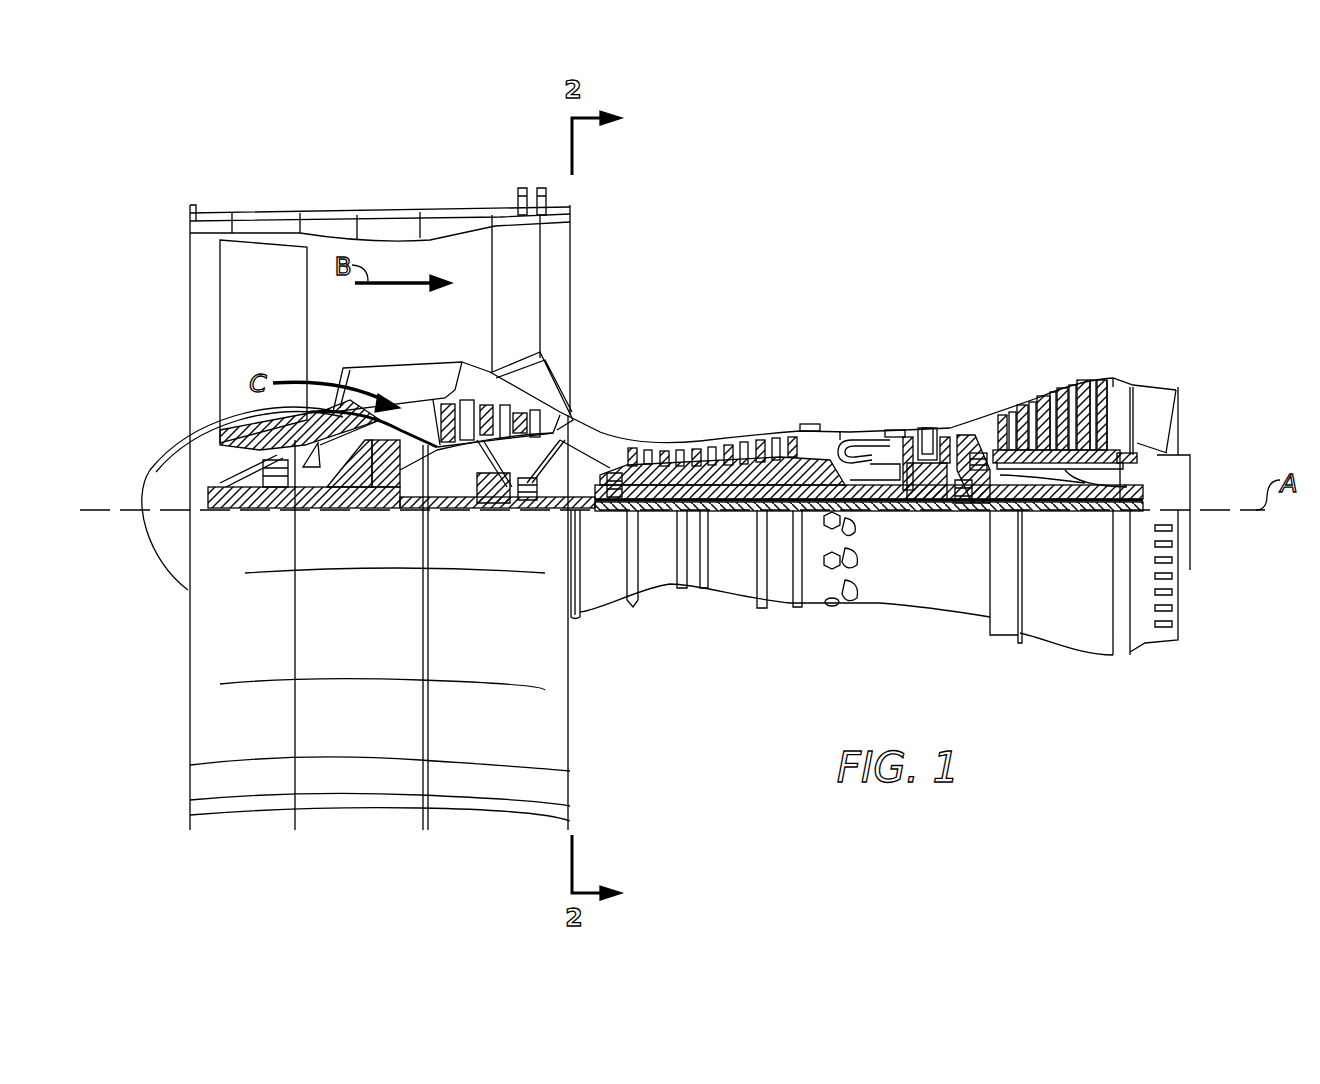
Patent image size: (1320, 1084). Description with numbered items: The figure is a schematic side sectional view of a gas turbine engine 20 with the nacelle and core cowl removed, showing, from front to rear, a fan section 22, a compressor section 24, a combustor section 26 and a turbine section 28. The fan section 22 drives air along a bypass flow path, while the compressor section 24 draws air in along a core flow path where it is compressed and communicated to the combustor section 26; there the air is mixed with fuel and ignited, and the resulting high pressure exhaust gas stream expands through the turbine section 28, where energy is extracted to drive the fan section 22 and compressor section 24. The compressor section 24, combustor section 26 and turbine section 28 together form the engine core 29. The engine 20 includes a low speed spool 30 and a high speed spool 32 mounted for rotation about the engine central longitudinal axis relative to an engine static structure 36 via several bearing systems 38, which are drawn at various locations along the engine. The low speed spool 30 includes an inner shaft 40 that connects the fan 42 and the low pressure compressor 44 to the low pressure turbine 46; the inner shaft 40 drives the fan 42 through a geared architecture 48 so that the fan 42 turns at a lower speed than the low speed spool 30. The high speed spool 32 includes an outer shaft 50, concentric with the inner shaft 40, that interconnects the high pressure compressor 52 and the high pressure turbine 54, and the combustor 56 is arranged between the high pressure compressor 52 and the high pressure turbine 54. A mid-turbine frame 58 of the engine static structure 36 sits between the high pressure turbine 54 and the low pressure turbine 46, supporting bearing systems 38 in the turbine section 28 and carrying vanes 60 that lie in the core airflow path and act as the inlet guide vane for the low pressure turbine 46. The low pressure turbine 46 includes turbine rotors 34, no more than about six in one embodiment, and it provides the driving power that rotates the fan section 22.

The gas turbine engine 20 is at (1034, 221).
The fan section 22 is at (178, 186).
The compressor section 24 is at (840, 313).
The combustor section 26 is at (850, 313).
The turbine section 28 is at (1140, 316).
The engine core 29 is at (430, 256).
The low speed spool 30 is at (730, 528).
The high speed spool 32 is at (762, 478).
The turbine rotors 34 is at (1085, 483).
The engine static structure 36 is at (780, 620).
The bearing systems 38 is at (268, 487).
The inner shaft 40 is at (590, 512).
The fan 42 is at (277, 316).
The low pressure compressor section 44 is at (503, 403).
The low pressure turbine section 46 is at (1052, 386).
The geared architecture 48 is at (386, 492).
The outer shaft 50 is at (860, 490).
The high pressure compressor section 52 is at (689, 445).
The high pressure turbine section 54 is at (930, 428).
The combustor 56 is at (858, 450).
The mid-turbine frame 58 is at (966, 405).
The vanes 60 is at (968, 503).